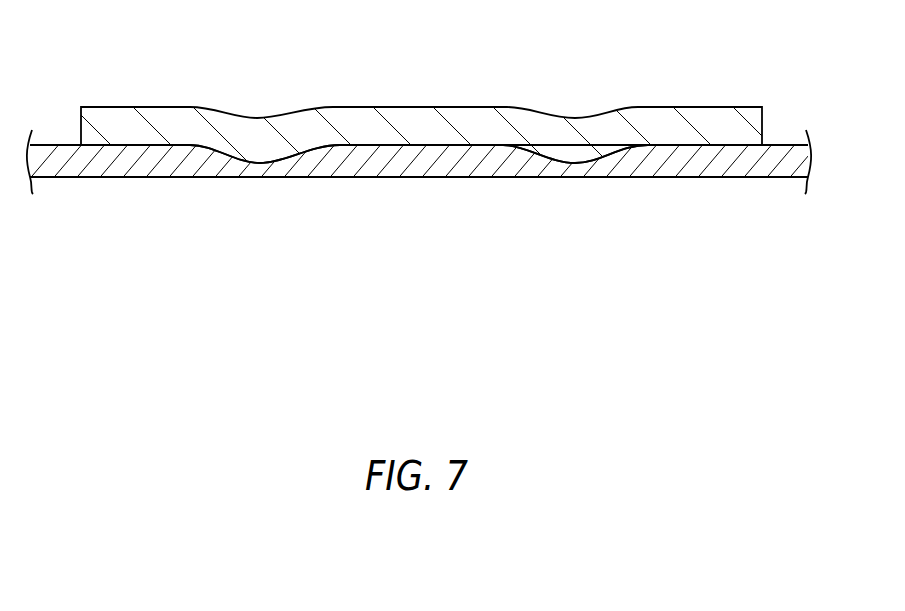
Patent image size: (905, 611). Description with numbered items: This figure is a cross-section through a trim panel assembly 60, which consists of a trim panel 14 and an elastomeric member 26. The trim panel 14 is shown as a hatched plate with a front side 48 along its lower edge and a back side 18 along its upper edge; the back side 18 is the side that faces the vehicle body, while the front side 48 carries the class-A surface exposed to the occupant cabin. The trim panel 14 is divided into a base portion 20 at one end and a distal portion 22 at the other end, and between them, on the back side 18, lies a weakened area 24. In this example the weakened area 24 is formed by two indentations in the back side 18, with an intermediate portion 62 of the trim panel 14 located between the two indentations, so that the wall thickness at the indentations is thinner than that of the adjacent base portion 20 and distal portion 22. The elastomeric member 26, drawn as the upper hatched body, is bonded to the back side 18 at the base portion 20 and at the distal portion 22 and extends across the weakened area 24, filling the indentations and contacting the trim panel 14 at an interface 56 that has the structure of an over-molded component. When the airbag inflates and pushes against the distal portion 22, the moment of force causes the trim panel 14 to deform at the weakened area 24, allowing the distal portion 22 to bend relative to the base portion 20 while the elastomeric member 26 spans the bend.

The trim panel 14 is at (438, 161).
The back side 18 is at (433, 138).
The base portion 20 is at (743, 162).
The distal portion 22 is at (438, 205).
The weakened area 24 is at (474, 134).
The elastomeric member 26 is at (108, 105).
The front side 48 is at (175, 190).
The interface 56 is at (493, 146).
The trim panel assembly 60 is at (125, 208).
The intermediate portion 62 is at (361, 137).